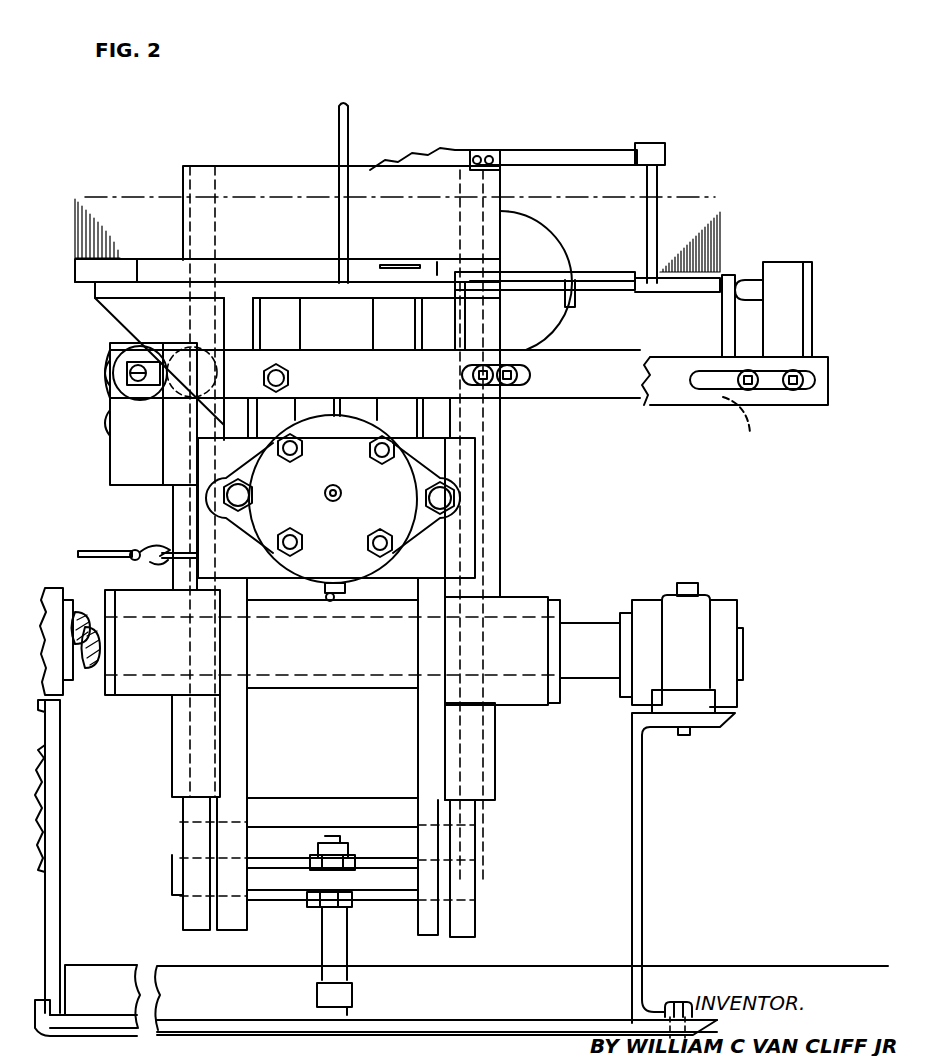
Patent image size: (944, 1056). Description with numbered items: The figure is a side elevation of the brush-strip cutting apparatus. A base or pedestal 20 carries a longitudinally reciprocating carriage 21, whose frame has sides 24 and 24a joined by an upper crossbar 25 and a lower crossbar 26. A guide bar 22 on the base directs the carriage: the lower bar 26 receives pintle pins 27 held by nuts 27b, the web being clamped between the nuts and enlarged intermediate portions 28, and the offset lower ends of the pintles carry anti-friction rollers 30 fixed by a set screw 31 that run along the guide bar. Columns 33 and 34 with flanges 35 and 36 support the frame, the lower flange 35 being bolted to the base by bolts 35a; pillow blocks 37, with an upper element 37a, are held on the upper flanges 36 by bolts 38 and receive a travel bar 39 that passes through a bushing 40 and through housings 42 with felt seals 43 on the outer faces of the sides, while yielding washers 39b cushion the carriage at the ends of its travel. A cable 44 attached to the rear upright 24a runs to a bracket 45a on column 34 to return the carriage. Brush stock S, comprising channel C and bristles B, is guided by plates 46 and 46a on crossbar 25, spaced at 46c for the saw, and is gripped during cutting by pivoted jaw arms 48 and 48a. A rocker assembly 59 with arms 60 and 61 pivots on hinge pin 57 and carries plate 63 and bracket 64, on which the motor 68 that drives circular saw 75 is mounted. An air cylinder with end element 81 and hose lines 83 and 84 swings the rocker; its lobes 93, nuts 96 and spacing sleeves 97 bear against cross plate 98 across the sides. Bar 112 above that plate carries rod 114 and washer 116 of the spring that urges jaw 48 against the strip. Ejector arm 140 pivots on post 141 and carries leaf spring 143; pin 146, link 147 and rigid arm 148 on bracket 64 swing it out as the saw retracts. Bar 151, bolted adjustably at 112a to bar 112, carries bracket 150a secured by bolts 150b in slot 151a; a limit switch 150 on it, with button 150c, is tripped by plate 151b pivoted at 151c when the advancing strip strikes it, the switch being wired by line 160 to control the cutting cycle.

The base or pedestal 20 is at (281, 1032).
The carriage 21 is at (432, 718).
The guide bar 22 is at (570, 972).
The side 24 is at (418, 814).
The side 24a is at (247, 752).
The upper crossbar 25 is at (307, 290).
The lower crossbar 26 is at (385, 890).
The pintle pin 27 is at (333, 843).
The nut 27b is at (350, 858).
The enlarged intermediate portion 28 is at (310, 905).
The anti-friction roller 30 is at (317, 995).
The set screw 31 is at (332, 1016).
The column 33 is at (642, 861).
The column 34 is at (55, 908).
The lower flange 35 is at (652, 1004).
The bolt 35a is at (689, 1002).
The upper flange 36 is at (724, 727).
The pillow block 37 is at (52, 588).
The grease fitting 37a is at (688, 583).
The bolt 38 is at (685, 736).
The travel bar 39 is at (592, 679).
The washer 39b is at (65, 680).
The bushing 40 is at (318, 693).
The housing 42 is at (147, 695).
The felt seal 43 is at (106, 590).
The cable 44 is at (106, 549).
The bracket 45a is at (45, 797).
The fixed guide plate 46 is at (261, 260).
The fixed guide plate 46a is at (437, 262).
The space 46c is at (347, 273).
The movable clamping jaw arm 48 is at (290, 321).
The jaw 48a is at (384, 335).
The tubular hinge pin 57 is at (268, 858).
The rocker assembly 59 is at (478, 808).
The arm 60 is at (205, 166).
The arm 61 is at (470, 185).
The plate 63 is at (183, 170).
The bracket 64 is at (482, 148).
The saw-driving motor 68 is at (550, 244).
The circular saw 75 is at (348, 108).
The cylinder end element 81 is at (272, 462).
The hose line 83 is at (342, 491).
The hose line 84 is at (345, 592).
The projecting lobe 93 is at (430, 477).
The nut 96 is at (455, 497).
The spacing sleeve 97 is at (215, 500).
The cross plate 98 is at (440, 521).
The bar 112 is at (232, 352).
The adjustable bolting 112a is at (512, 385).
The rod 114 is at (290, 372).
The washer 116 is at (292, 381).
The ejector arm 140 is at (600, 292).
The vertical post 141 is at (475, 327).
The leaf spring 143 is at (562, 286).
The vertical pin 146 is at (657, 190).
The link 147 is at (660, 145).
The rigid arm 148 is at (570, 150).
The limit switch 150 is at (792, 262).
The bracket 150a is at (812, 318).
The bolt 150b is at (793, 388).
The connector 150c is at (750, 280).
The bar 151 is at (668, 405).
The slot 151a is at (707, 390).
The plate 151b is at (722, 326).
The pivot 151c is at (746, 426).
The line 160 is at (183, 400).
The bristles B is at (720, 225).
The channel C is at (68, 272).
The brush strip S is at (72, 294).